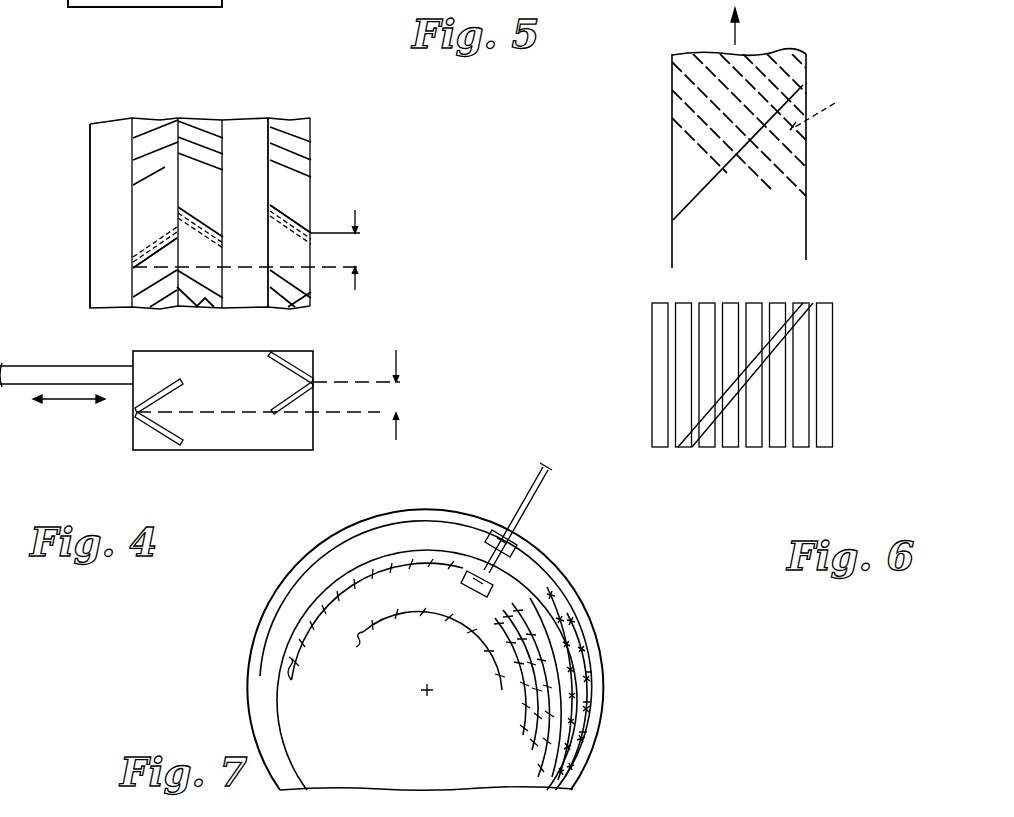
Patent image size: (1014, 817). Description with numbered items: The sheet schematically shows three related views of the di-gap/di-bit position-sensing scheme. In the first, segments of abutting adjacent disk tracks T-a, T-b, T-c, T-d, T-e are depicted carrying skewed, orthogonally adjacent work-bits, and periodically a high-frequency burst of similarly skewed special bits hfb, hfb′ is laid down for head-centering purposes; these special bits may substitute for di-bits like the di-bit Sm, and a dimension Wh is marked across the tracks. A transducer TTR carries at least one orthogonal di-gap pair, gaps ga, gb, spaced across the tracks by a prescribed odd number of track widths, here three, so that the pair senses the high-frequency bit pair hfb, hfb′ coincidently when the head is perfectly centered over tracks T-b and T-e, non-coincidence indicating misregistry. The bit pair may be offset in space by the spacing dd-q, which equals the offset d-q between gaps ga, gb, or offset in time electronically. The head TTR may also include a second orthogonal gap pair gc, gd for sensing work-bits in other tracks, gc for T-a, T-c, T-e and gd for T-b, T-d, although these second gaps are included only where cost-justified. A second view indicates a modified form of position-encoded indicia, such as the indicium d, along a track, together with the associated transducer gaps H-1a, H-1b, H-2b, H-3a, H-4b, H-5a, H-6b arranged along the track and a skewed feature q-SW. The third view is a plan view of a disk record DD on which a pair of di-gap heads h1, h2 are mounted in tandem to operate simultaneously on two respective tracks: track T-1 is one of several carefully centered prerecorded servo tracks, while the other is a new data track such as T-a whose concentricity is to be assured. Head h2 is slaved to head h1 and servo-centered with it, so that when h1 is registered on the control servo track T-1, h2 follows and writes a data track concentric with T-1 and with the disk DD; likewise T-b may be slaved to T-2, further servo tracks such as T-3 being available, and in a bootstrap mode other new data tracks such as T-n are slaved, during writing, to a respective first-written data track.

In FIG. 4, the disk track T-a is at (106, 118).
In FIG. 7, the disk track T-a is at (375, 631).
In FIG. 4, the disk track T-b is at (152, 118).
In FIG. 7, the disk track T-b is at (524, 748).
In FIG. 4, the disk track T-c is at (194, 118).
In FIG. 7, the disk track T-c is at (516, 716).
In FIG. 4, the disk track T-d is at (243, 118).
In FIG. 4, the disk track T-e is at (285, 118).
In FIG. 4, the width of head Wh is at (264, 184).
In FIG. 4, the high-frequency special bit hfb is at (133, 264).
In FIG. 4, the high-frequency special bit hfb′ is at (311, 233).
In FIG. 4, the offset spacing dd-q is at (268, 250).
In FIG. 4, the transducer TTR is at (240, 460).
In FIG. 4, the orthogonal gap gb is at (167, 384).
In FIG. 4, the second orthogonal gap gc is at (150, 428).
In FIG. 4, the orthogonal gap ga is at (313, 368).
In FIG. 4, the second orthogonal gap gd is at (292, 407).
In FIG. 4, the gap offset d-q is at (284, 395).
In FIG. 6, the di-bit Sm is at (690, 201).
In FIG. 6, the recorded track d is at (825, 108).
In FIG. 6, the head 6b H-6b is at (682, 303).
In FIG. 6, the head 5a H-5a is at (707, 449).
In FIG. 6, the head 4b H-4b is at (724, 303).
In FIG. 6, the head 3a H-3a is at (754, 449).
In FIG. 6, the head 2b H-2b is at (779, 303).
In FIG. 6, the head 1a H-1a is at (803, 449).
In FIG. 6, the head 1b H-1b is at (800, 303).
In FIG. 6, the slanted slot q-SW is at (820, 294).
In FIG. 7, the disk DD is at (577, 592).
In FIG. 7, the new data track T-n is at (428, 649).
In FIG. 7, the prerecorded servo track T-1 is at (592, 675).
In FIG. 7, the prerecorded servo track T-2 is at (587, 702).
In FIG. 7, the tape layer 3 T-3 is at (583, 732).
In FIG. 7, the di-gap head h1 is at (519, 547).
In FIG. 7, the di-gap head h2 is at (468, 574).